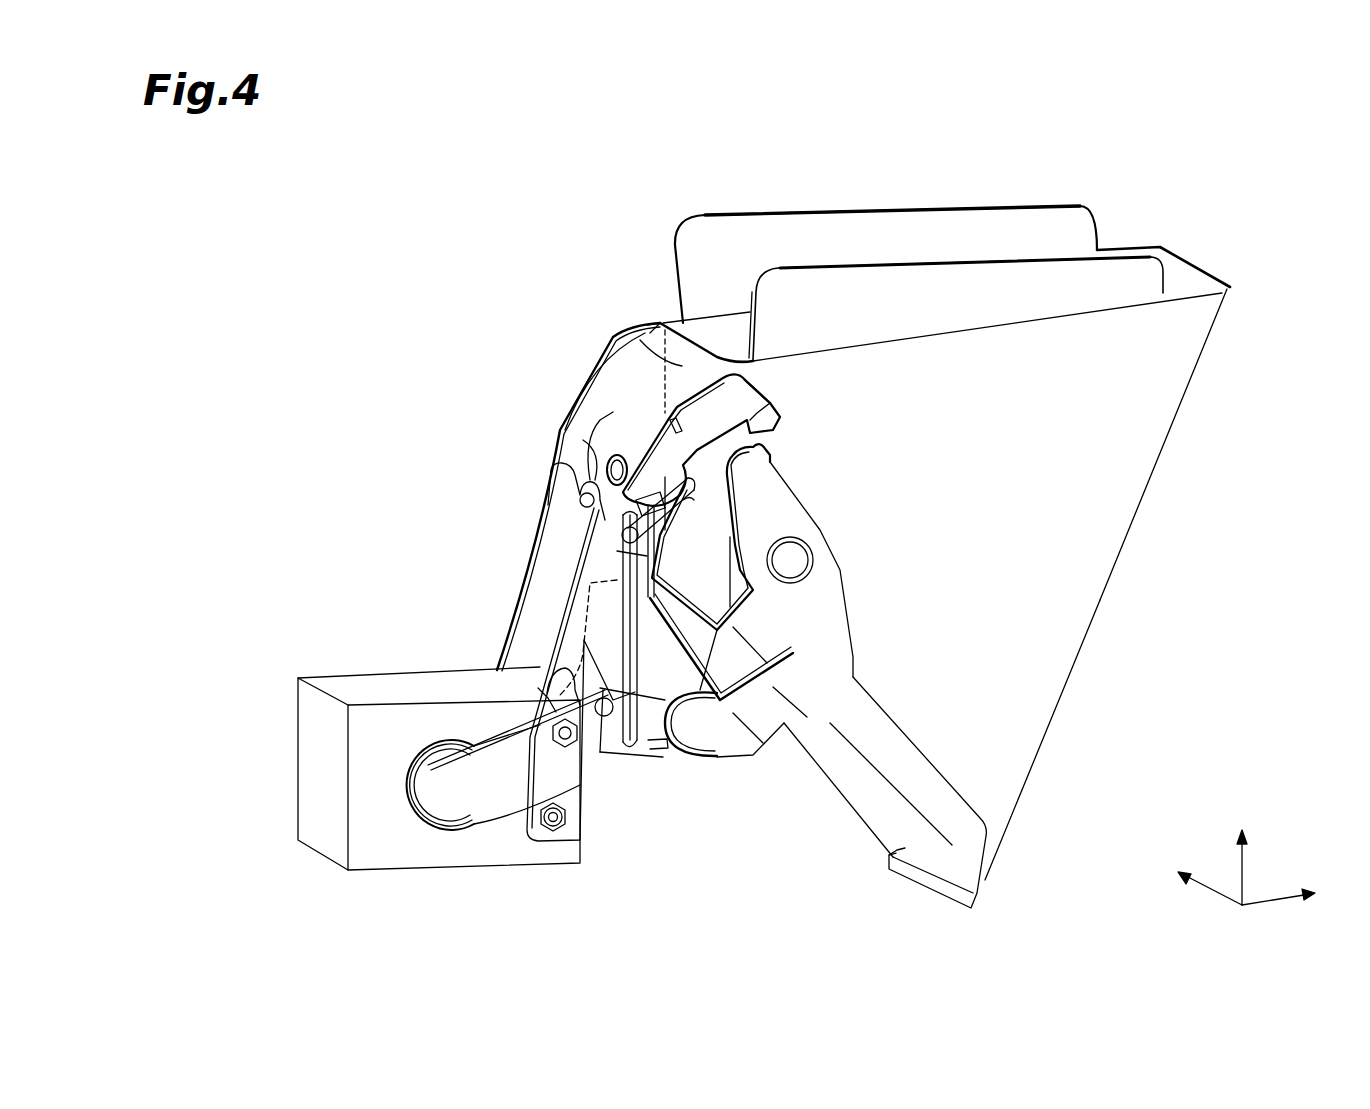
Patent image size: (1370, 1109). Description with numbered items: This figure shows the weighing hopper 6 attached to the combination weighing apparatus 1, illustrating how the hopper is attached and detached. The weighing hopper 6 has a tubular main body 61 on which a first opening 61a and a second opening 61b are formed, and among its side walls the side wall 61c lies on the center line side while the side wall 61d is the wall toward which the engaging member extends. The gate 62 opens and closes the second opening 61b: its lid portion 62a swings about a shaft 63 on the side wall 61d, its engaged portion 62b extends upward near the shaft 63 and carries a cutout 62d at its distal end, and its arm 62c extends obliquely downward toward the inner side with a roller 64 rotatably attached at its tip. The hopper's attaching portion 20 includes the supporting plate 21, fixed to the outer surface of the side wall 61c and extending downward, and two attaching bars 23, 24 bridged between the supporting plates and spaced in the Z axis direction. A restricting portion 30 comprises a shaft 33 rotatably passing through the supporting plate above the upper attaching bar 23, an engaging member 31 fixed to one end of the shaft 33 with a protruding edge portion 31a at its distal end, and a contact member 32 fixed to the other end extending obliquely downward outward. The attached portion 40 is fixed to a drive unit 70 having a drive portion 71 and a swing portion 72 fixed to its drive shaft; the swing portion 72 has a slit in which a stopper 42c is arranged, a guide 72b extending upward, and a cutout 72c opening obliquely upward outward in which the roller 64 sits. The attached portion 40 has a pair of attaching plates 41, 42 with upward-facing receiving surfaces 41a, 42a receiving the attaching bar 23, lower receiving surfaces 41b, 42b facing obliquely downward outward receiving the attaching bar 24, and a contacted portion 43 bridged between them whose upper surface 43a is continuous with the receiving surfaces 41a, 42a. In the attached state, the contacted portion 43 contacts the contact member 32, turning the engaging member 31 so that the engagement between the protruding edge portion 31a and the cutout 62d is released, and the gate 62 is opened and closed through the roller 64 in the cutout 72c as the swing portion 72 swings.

The combination weighing apparatus 1 is at (386, 197).
The weighing hopper 6 is at (1253, 421).
The main body 61 is at (1153, 482).
The first opening 61a is at (727, 343).
The second opening 61b is at (830, 741).
The side wall 61c is at (636, 328).
The side wall 61d is at (1073, 553).
The gate 62 is at (945, 905).
The lid portion 62a is at (905, 850).
The engaged portion 62b is at (770, 497).
The arm 62c is at (800, 685).
The cutout 62d is at (763, 453).
The shaft 63 is at (795, 558).
The roller 64 is at (706, 744).
The attaching portion 20 is at (460, 383).
The supporting plate 21 is at (587, 420).
The attaching bar 23 is at (590, 478).
The attaching bar 24 is at (600, 745).
The restricting portion 30 is at (612, 252).
The engaging member 31 is at (653, 450).
The protruding edge portion 31a is at (773, 403).
The contact member 32 is at (605, 445).
The shaft 33 is at (620, 440).
The attached portion 40 is at (402, 533).
The attaching plate 41 is at (545, 590).
The receiving surface 41a is at (573, 473).
The receiving surface 41b is at (540, 700).
The attaching plate 42 is at (600, 627).
The receiving surface 42a is at (635, 512).
The receiving surface 42b is at (433, 757).
The stopper 42c is at (540, 695).
The contacted portion 43 is at (625, 540).
The upper surface 43a is at (688, 505).
The drive unit 70 is at (267, 849).
The drive portion 71 is at (320, 835).
The swing portion 72 is at (487, 782).
The guide 72b is at (630, 762).
The cutout 72c is at (666, 748).